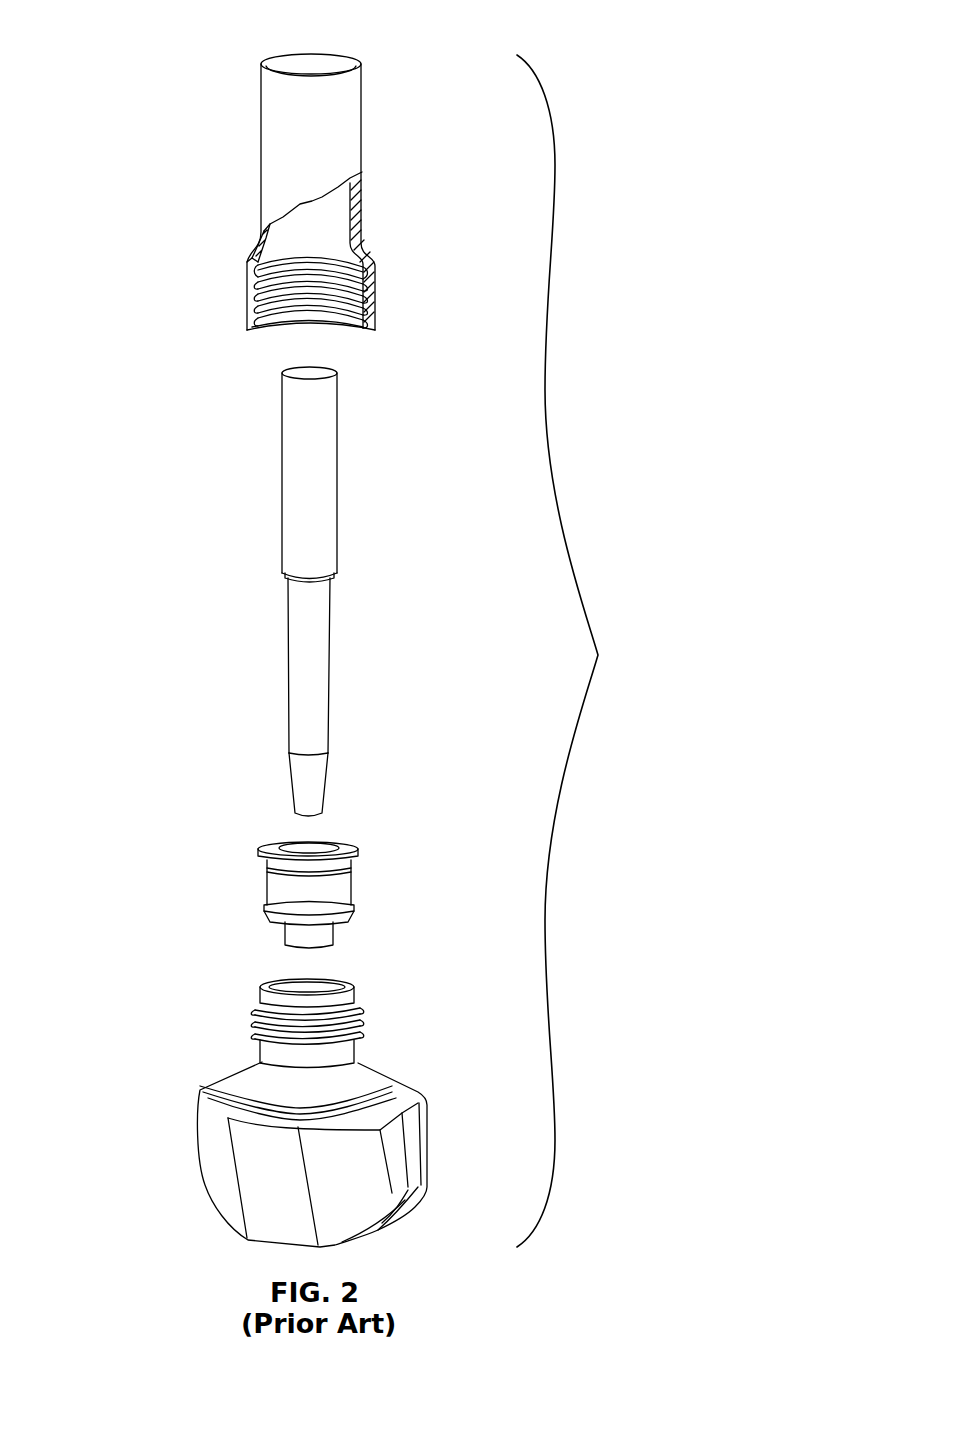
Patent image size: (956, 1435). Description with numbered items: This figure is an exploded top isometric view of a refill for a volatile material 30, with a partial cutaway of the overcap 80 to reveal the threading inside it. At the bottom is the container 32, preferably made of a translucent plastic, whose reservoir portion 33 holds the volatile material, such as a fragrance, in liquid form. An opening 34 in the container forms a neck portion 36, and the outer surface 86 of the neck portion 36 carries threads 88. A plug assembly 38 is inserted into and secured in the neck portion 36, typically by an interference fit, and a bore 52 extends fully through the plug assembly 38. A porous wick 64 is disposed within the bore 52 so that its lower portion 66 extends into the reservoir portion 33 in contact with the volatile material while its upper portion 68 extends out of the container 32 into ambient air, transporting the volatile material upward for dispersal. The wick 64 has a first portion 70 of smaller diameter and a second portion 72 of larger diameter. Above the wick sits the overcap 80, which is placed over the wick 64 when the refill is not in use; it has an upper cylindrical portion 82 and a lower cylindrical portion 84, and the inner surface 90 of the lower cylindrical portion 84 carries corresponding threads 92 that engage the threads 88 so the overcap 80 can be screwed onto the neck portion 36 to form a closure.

The refill for a volatile material 30 is at (184, 44).
The container 32 is at (402, 1090).
The reservoir portion 33 is at (271, 1197).
The opening 34 is at (337, 992).
The neck portion 36 is at (358, 998).
The plug assembly 38 is at (356, 888).
The bore 52 is at (324, 845).
The porous wick 64 is at (331, 481).
The lower portion of the wick 66 is at (323, 629).
The upper portion of the wick 68 is at (296, 420).
The first portion of the wick 70 is at (321, 719).
The second portion of the wick 72 is at (329, 553).
The overcap 80 is at (352, 176).
The upper cylindrical portion 82 is at (350, 100).
The lower cylindrical portion 84 is at (374, 294).
The outer surface of the neck portion 86 is at (267, 1048).
The threads 88 is at (364, 1022).
The inner surface of the lower cylindrical portion 90 is at (254, 323).
The corresponding threads 92 is at (262, 267).